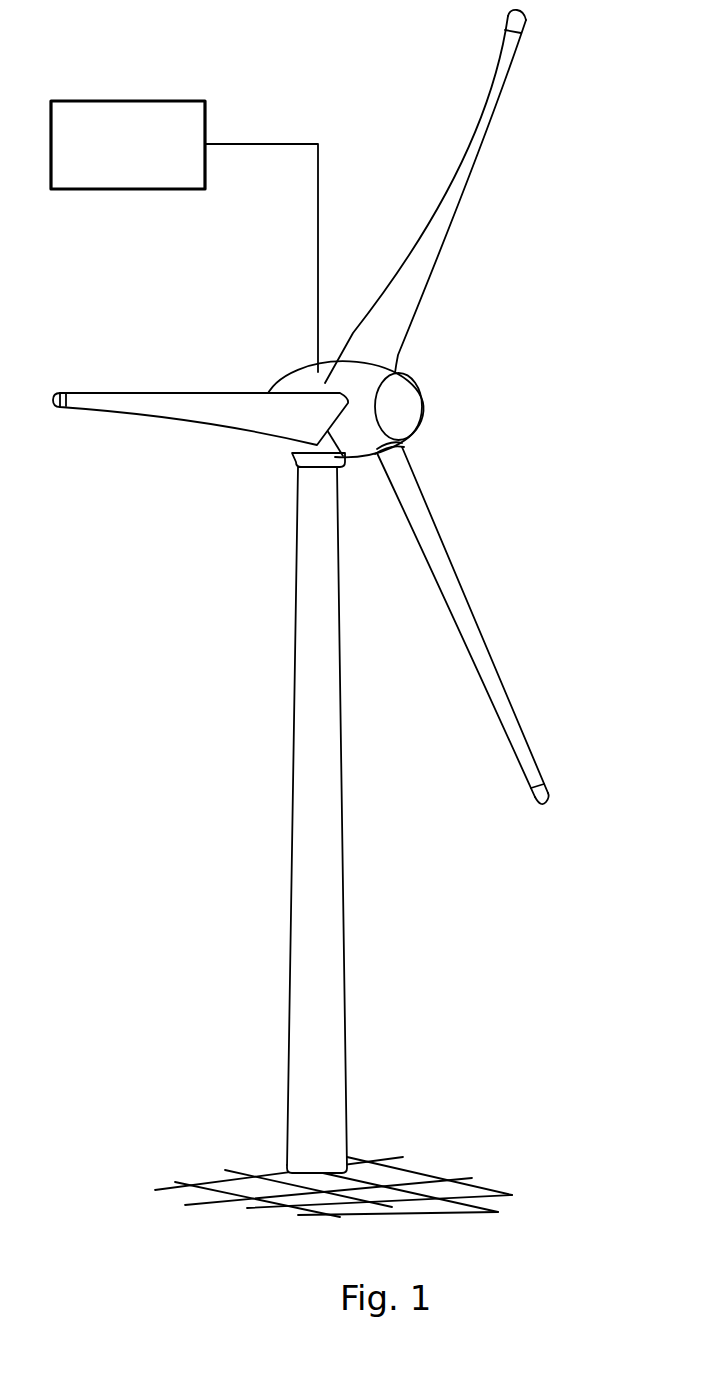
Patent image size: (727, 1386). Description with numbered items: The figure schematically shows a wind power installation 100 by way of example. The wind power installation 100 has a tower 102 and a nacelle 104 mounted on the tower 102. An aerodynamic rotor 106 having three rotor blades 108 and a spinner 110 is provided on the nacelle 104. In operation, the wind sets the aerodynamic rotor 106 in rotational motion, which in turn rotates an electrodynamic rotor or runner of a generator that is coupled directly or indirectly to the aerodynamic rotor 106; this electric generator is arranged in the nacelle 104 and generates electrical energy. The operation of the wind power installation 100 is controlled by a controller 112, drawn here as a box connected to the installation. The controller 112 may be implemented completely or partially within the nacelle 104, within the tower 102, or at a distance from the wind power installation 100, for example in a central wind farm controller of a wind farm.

The wind power installation 100 is at (346, 613).
The tower 102 is at (330, 902).
The nacelle 104 is at (285, 380).
The aerodynamic rotor 106 is at (346, 407).
The rotor blades 108 is at (482, 98).
The spinner 110 is at (403, 405).
The controller 112 is at (127, 113).